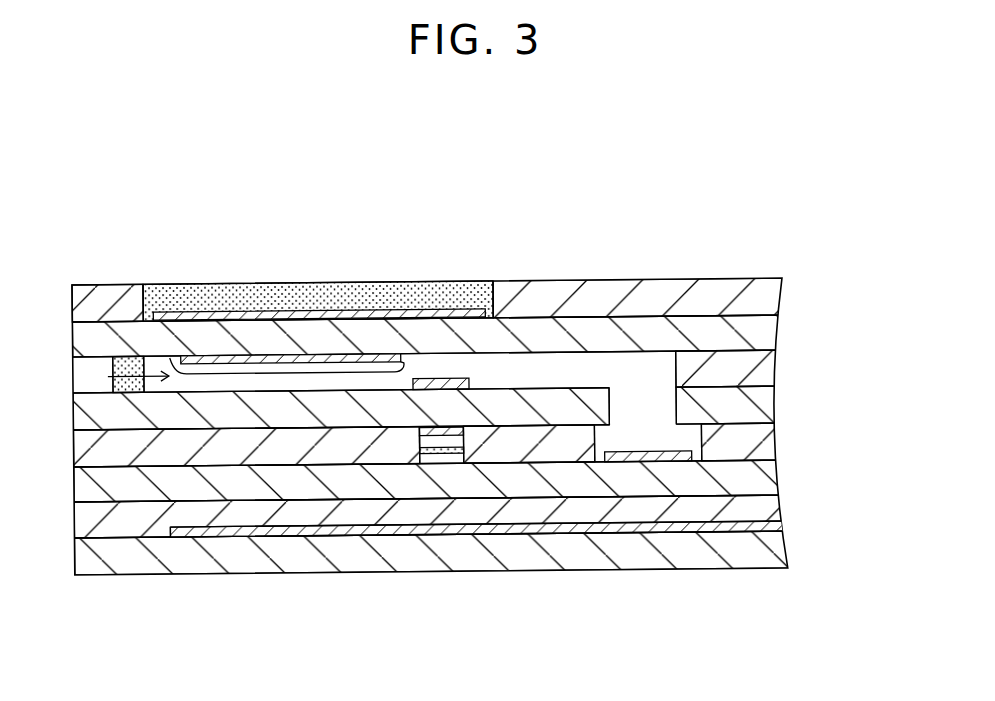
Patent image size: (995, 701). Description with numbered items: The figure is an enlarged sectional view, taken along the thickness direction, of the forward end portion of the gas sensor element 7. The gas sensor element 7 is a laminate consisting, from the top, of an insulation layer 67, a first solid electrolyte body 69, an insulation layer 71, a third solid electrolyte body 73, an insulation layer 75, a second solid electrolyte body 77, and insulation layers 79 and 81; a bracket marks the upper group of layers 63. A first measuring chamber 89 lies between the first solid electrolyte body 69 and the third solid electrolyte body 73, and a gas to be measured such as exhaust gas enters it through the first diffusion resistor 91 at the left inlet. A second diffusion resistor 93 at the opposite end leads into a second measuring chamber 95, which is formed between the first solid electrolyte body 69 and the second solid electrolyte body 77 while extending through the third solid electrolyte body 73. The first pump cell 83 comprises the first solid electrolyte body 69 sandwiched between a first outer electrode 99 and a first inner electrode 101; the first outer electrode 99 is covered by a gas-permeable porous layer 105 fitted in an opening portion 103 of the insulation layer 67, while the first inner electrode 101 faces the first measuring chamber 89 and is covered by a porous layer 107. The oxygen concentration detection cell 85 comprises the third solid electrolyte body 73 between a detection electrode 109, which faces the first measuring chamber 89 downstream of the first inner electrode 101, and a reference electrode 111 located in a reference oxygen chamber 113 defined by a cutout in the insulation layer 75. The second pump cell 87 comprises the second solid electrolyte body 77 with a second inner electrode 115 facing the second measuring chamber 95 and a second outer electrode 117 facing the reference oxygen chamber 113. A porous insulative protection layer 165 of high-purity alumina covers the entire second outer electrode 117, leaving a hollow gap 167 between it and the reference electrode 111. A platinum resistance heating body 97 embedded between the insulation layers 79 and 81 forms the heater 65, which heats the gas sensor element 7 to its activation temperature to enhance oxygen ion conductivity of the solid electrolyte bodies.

The gas sensor element 7 is at (487, 121).
The sensor element portion 63 is at (854, 381).
The heater 65 is at (854, 532).
The insulation layer 67 is at (454, 300).
The first solid electrolyte body 69 is at (454, 287).
The insulation layer 71 is at (455, 371).
The third solid electrolyte body 73 is at (454, 323).
The insulation layer 75 is at (454, 445).
The second solid electrolyte body 77 is at (456, 551).
The insulation layer 79 is at (455, 515).
The insulation layer 81 is at (455, 556).
The first pump cell 83 is at (345, 205).
The oxygen concentration detection cell 85 is at (539, 205).
The second pump cell 87 is at (541, 660).
The first measuring chamber 89 is at (286, 300).
The first diffusion resistor 91 is at (122, 308).
The second diffusion resistor 93 is at (647, 330).
The second measuring chamber 95 is at (707, 286).
The resistance heating body 97 is at (503, 535).
The first outer electrode 99 is at (318, 270).
The first inner electrode 101 is at (292, 293).
The opening portion 103 is at (307, 257).
The porous layer 105 is at (347, 258).
The porous layer 107 is at (440, 314).
The detection electrode 109 is at (458, 290).
The reference electrode 111 is at (560, 287).
The reference oxygen chamber 113 is at (397, 533).
The second inner electrode 115 is at (635, 546).
The second outer electrode 117 is at (500, 563).
The insulative protection layer 165 is at (438, 566).
The gap 167 is at (392, 553).